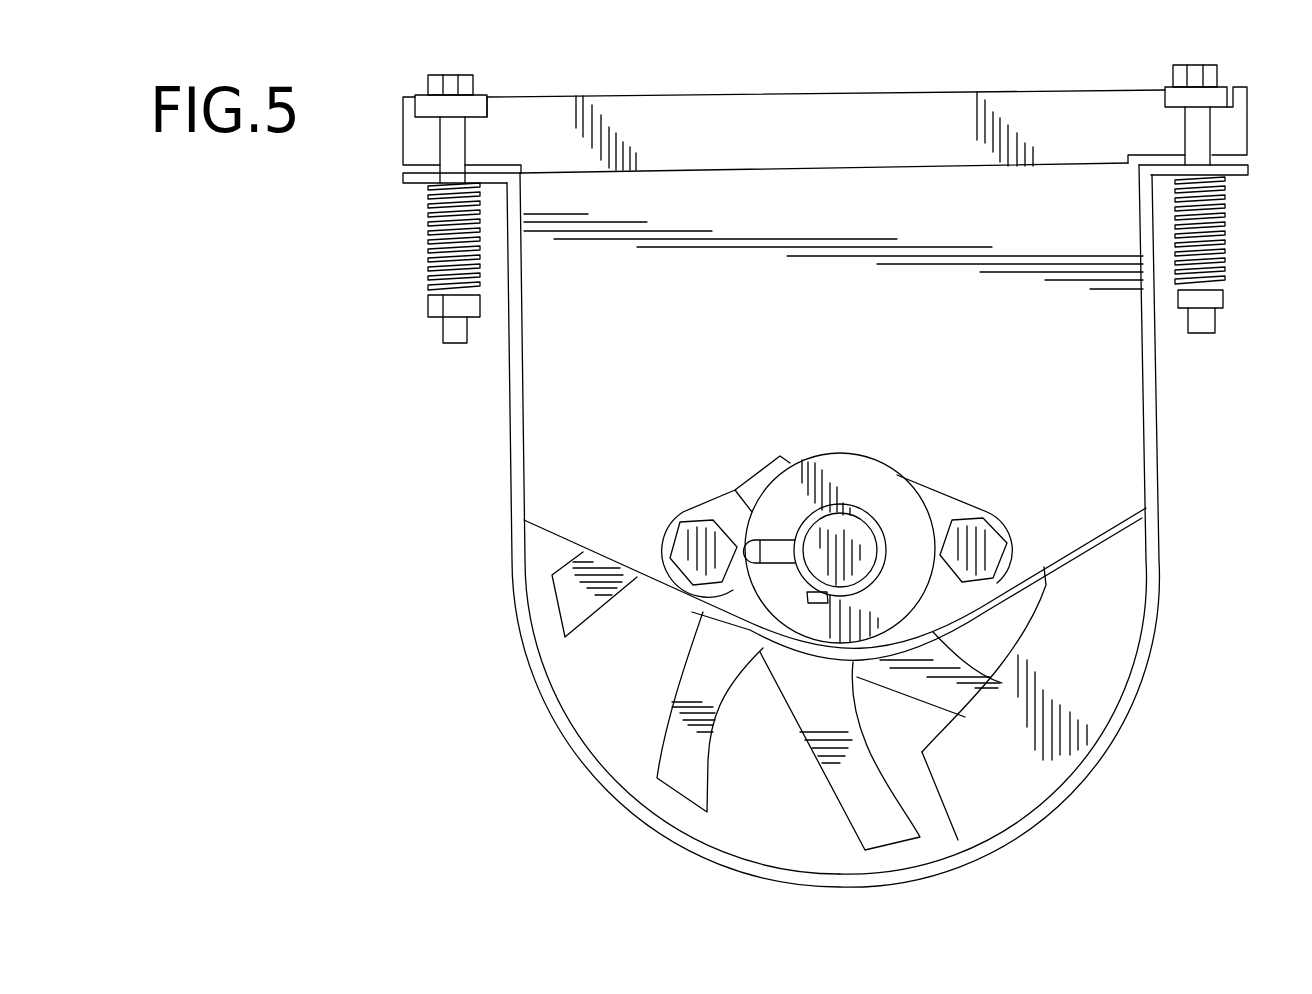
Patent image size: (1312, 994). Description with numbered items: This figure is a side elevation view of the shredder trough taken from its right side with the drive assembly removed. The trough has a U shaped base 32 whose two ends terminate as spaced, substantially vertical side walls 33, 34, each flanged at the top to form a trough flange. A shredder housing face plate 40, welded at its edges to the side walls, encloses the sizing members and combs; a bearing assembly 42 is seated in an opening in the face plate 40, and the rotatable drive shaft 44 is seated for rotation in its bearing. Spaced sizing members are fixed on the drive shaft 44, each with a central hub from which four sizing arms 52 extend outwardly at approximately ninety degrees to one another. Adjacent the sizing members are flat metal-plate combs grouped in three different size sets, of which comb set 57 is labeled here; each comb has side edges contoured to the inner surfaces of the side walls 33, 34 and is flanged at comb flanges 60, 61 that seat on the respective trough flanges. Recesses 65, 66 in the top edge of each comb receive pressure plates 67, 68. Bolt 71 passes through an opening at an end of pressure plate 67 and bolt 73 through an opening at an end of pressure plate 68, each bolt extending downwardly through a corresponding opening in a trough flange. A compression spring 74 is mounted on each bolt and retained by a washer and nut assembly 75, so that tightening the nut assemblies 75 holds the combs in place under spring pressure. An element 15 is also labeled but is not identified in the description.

The shroud plate 15 is at (1120, 497).
The U shaped base 32 is at (1112, 737).
The trough side wall 33 is at (1158, 380).
The trough side wall 34 is at (512, 428).
The shredder housing face plate 40 is at (846, 331).
The bearing assembly 42 is at (720, 507).
The rotatable drive shaft 44 is at (848, 545).
The sizing arm 52 is at (825, 745).
The comb set 57 is at (943, 785).
The comb flange 60 is at (410, 145).
The comb flange 61 is at (1233, 135).
The comb recess 65 is at (1160, 100).
The comb recess 66 is at (486, 100).
The pressure plate 67 is at (1228, 100).
The pressure plate 68 is at (425, 106).
The bolt 71 is at (1218, 72).
The bolt 73 is at (430, 88).
The compression spring 74 is at (430, 252).
The washer and nut assembly 75 is at (445, 331).